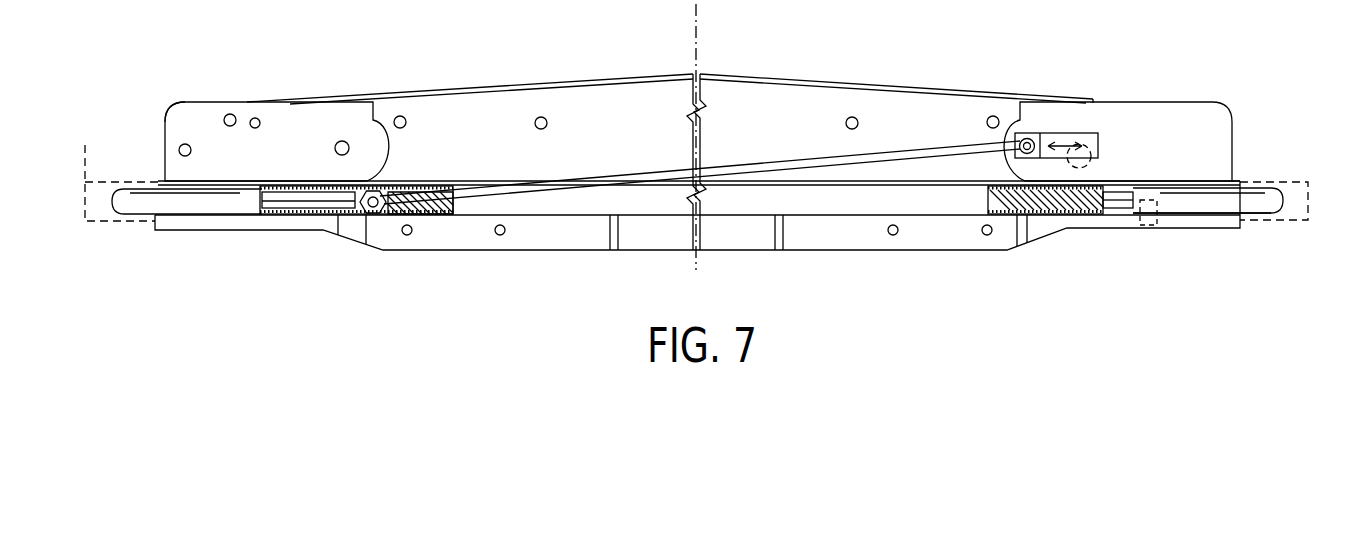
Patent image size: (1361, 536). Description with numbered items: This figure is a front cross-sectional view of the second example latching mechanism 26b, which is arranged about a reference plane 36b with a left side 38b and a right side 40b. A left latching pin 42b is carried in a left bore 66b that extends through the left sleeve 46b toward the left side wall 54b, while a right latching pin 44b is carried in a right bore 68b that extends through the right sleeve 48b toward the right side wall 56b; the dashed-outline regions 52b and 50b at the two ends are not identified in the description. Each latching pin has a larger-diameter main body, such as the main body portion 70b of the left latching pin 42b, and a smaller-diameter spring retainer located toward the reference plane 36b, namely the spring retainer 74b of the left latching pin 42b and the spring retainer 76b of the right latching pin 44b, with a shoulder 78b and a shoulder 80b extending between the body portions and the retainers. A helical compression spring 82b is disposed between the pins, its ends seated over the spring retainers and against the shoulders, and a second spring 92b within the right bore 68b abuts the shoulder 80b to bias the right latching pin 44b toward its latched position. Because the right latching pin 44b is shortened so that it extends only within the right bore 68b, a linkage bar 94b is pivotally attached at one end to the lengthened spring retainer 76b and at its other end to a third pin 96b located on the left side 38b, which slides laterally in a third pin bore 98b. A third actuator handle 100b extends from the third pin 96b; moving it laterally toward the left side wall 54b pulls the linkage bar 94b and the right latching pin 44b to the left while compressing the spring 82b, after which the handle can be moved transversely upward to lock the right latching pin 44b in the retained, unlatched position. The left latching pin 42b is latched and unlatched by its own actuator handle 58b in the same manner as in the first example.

The latching mechanism 26b is at (128, 150).
The reference plane 36b is at (696, 44).
The left side 38b is at (895, 65).
The right side 40b is at (524, 63).
The left latching pin 42b is at (1268, 203).
The right latching pin 44b is at (137, 203).
The left sleeve 46b is at (1236, 178).
The right sleeve 48b is at (158, 183).
The right bearing region 50b is at (1308, 180).
The left bearing region 52b is at (107, 169).
The left side wall 54b is at (1230, 130).
The right side wall 56b is at (165, 146).
The actuator handle 58b is at (1150, 228).
The left bore 66b is at (1018, 213).
The right bore 68b is at (292, 213).
The main body portion 70b is at (1227, 203).
The spring retainer 74b is at (1113, 195).
The spring retainer 76b is at (302, 197).
The shoulder 78b is at (1122, 207).
The shoulder 80b is at (263, 198).
The spring 82b is at (993, 210).
The second spring 92b is at (395, 218).
The linkage bar 94b is at (738, 167).
The third pin 96b is at (1042, 143).
The third pin bore 98b is at (1067, 133).
The third actuator handle 100b is at (1100, 136).